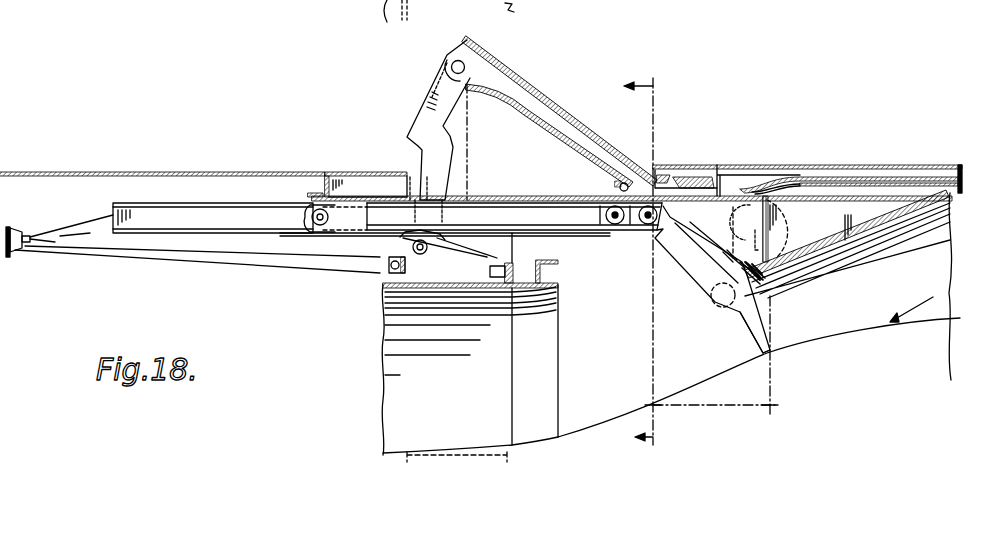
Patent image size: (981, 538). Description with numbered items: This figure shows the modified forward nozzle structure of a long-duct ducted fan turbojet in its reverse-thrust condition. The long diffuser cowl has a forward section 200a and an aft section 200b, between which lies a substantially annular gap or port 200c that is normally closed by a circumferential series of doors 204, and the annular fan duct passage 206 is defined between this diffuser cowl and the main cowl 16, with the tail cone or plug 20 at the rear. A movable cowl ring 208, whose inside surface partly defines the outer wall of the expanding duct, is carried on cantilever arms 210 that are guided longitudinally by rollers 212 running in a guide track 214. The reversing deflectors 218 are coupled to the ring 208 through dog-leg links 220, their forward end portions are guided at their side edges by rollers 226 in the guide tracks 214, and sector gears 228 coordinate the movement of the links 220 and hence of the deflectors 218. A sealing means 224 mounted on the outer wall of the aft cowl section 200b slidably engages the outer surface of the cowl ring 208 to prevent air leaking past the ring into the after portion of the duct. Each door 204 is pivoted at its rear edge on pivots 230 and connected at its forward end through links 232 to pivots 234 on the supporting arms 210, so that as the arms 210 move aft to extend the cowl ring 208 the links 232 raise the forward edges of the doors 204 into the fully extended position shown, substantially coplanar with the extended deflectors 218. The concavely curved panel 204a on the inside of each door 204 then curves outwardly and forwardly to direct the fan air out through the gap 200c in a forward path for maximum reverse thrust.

The main cowl 16 is at (759, 367).
The tail cone or plug 20 is at (701, 261).
The forward section of the diffuser cowl 200a is at (190, 172).
The aft section of the diffuser cowl 200b is at (770, 165).
The gap or port 200c is at (550, 172).
The doors 204 is at (511, 76).
The concavely curved panel 204a is at (534, 113).
The fan duct passage 206 is at (481, 396).
The movable cowl ring 208 is at (888, 300).
The cantilever arms 210 is at (334, 233).
The rollers 212 is at (642, 226).
The guide track 214 is at (245, 203).
The reversing deflectors 218 is at (760, 333).
The dog-leg links 220 is at (733, 207).
The sealing means 224 is at (693, 184).
The rollers 226 is at (607, 225).
The sector gears 228 is at (825, 180).
The pivots 230 is at (626, 182).
The links 232 is at (432, 155).
The pivots 234 is at (383, 290).